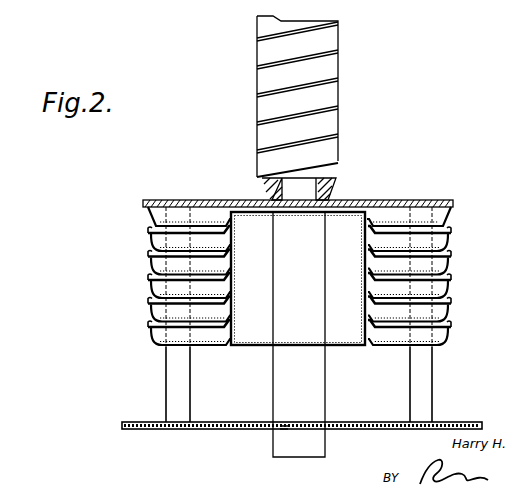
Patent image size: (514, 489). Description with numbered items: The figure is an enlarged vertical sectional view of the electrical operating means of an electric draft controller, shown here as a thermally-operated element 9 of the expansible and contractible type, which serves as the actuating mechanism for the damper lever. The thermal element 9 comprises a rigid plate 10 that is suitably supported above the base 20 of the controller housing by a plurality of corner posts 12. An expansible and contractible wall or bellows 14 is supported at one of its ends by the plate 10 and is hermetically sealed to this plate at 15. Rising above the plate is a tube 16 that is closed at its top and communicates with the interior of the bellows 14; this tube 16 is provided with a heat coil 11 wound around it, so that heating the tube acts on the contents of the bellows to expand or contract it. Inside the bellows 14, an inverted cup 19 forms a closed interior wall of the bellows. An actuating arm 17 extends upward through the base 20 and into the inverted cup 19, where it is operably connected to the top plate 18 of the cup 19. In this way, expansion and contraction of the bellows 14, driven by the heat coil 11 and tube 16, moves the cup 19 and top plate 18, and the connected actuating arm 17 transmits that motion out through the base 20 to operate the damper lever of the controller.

The thermally-operated element 9 is at (140, 236).
The rigid plate 10 is at (167, 200).
The heat coil 11 is at (257, 66).
The corner posts 12 is at (167, 392).
The bellows 14 is at (150, 291).
The hermetic seal 15 is at (455, 205).
The tube 16 is at (268, 138).
The actuating arm 17 is at (276, 458).
The top plate 18 is at (257, 215).
The inverted cup 19 is at (238, 334).
The base 20 is at (142, 430).